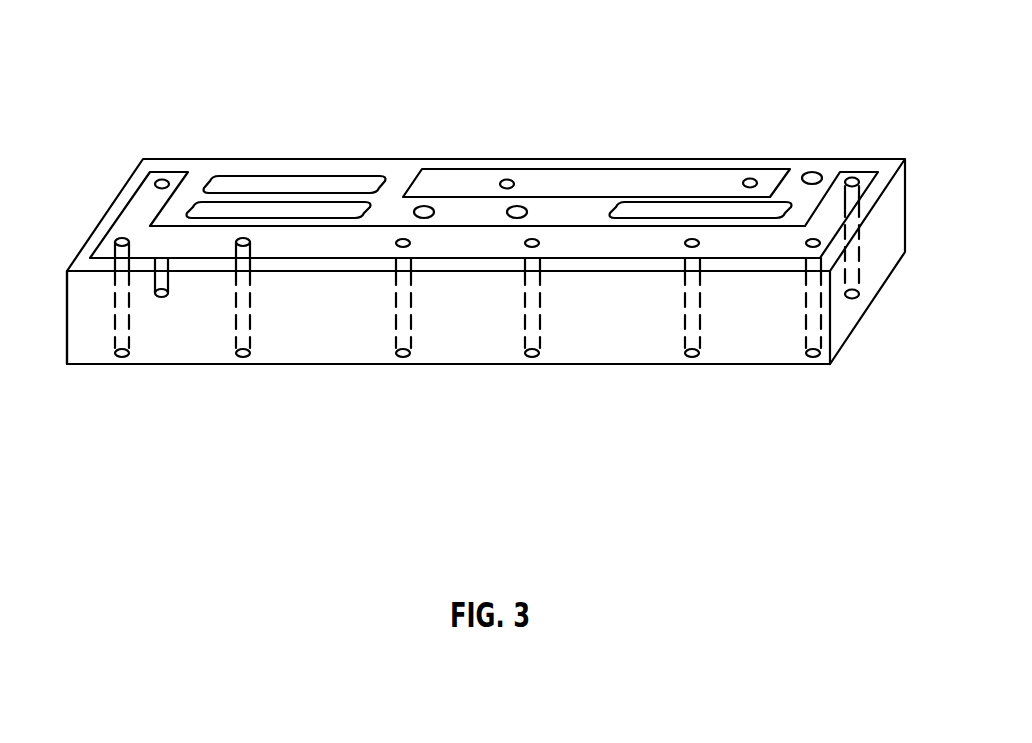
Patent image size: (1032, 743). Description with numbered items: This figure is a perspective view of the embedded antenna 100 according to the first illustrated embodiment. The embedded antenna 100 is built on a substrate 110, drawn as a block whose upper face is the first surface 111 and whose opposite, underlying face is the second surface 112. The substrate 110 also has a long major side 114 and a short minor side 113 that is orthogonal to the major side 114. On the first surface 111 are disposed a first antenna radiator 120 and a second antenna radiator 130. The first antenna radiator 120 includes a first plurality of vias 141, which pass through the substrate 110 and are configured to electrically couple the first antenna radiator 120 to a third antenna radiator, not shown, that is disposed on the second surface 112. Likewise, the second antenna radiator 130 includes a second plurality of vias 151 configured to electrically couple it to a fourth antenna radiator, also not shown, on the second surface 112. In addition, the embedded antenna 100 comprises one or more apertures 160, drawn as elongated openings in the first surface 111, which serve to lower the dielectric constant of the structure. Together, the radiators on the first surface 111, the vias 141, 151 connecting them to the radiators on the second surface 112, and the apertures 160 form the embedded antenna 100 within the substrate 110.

The embedded antenna 100 is at (133, 55).
The substrate 110 is at (480, 337).
The first surface 111 is at (155, 163).
The second surface 112 is at (170, 364).
The minor side 113 is at (68, 342).
The major side 114 is at (613, 364).
The first antenna radiator 120 is at (857, 182).
The second antenna radiator 130 is at (593, 182).
The first plurality of vias 141 is at (400, 356).
The second plurality of vias 151 is at (505, 180).
The apertures 160 is at (298, 210).